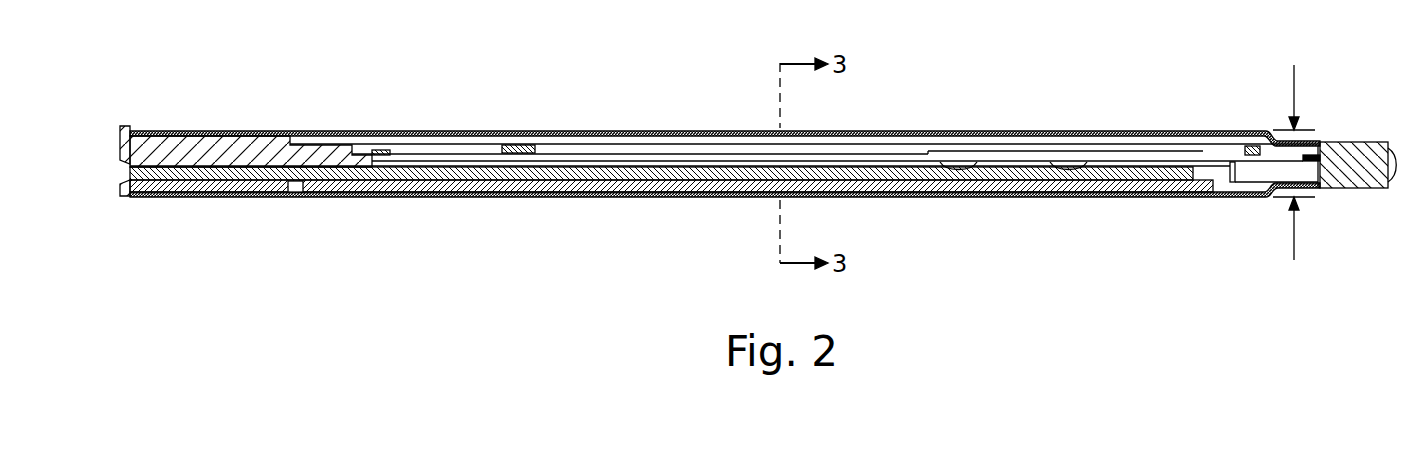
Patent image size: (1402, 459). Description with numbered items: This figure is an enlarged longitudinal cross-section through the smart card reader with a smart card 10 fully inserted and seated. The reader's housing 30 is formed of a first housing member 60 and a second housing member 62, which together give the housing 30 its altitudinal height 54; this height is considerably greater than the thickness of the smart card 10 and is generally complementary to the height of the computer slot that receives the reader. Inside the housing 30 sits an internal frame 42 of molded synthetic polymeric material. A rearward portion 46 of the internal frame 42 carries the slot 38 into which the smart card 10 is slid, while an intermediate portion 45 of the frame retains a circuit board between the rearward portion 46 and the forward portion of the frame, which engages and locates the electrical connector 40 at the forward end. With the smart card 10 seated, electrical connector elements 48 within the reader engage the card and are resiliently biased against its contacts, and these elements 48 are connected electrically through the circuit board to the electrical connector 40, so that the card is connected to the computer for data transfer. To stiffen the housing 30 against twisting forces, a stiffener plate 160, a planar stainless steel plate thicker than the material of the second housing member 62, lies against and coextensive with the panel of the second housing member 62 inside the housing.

The smart card 10 is at (557, 186).
The housing 30 is at (493, 132).
The slot 38 is at (201, 196).
The electrical connector 40 is at (1348, 153).
The internal frame 42 is at (599, 144).
The intermediate portion 45 is at (735, 143).
The rearward portion 46 is at (205, 157).
The electrical connector elements 48 is at (947, 168).
The altitudinal height 54 is at (1294, 237).
The first housing member 60 is at (326, 131).
The second housing member 62 is at (380, 196).
The stiffener plate 160 is at (733, 189).